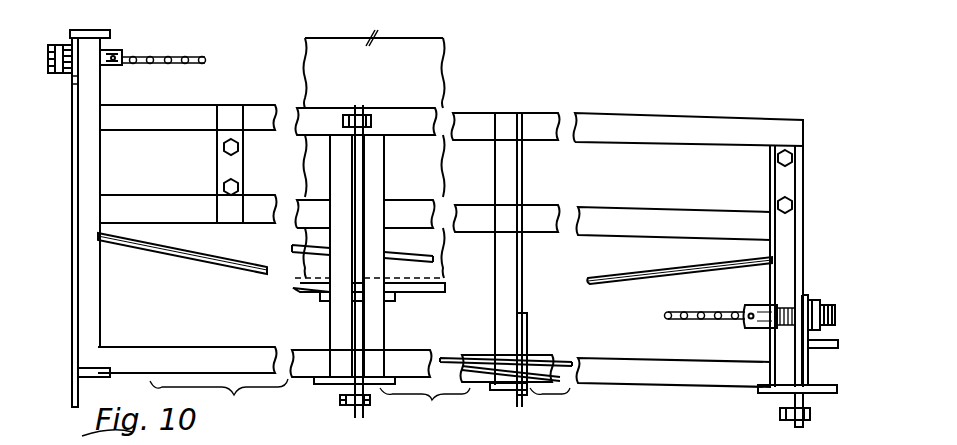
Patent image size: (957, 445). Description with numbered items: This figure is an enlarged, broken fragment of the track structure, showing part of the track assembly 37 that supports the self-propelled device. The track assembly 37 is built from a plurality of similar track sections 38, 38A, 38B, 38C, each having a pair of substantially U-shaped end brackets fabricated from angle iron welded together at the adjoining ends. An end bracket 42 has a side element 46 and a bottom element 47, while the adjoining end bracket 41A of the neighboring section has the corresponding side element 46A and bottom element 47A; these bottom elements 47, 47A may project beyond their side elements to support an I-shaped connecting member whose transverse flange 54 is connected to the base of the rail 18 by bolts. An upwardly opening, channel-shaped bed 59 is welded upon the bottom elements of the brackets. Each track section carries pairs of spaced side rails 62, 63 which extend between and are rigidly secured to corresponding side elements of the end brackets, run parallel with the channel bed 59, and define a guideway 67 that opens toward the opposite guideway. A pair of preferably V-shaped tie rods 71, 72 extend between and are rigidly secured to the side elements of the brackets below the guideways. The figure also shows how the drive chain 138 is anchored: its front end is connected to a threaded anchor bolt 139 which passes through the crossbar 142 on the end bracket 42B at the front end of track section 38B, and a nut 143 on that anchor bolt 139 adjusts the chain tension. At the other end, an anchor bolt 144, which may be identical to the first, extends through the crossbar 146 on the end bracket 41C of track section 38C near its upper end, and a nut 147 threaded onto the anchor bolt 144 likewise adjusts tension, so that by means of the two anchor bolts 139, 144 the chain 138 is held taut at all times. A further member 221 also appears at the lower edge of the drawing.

The rail 18 is at (425, 67).
The track assembly 37 is at (663, 115).
The track section 38 is at (293, 378).
The track section 38A is at (475, 118).
The track section 38B is at (748, 100).
The track section 38C is at (195, 105).
The end bracket 41A is at (386, 337).
The end bracket 41C is at (86, 318).
The end bracket 42 is at (322, 328).
The end bracket 42B is at (780, 182).
The side element 46 is at (337, 163).
The side element 46A is at (373, 172).
The bottom element 47 is at (353, 410).
The bottom element 47A is at (364, 412).
The transverse flange 54 is at (300, 305).
The channel-shaped bed 59 is at (597, 378).
The side rail 62 is at (603, 123).
The side rail 63 is at (602, 225).
The guideway 67 is at (650, 207).
The tie rod 71 is at (594, 286).
The tie rod 72 is at (670, 270).
The chain 138 is at (684, 321).
The threaded anchor bolt 139 is at (833, 304).
The crossbar 142 is at (818, 348).
The nut 143 is at (810, 298).
The anchor bolt 144 is at (117, 55).
The crossbar 146 is at (72, 82).
The nut 147 is at (57, 44).
The member 221 is at (510, 443).